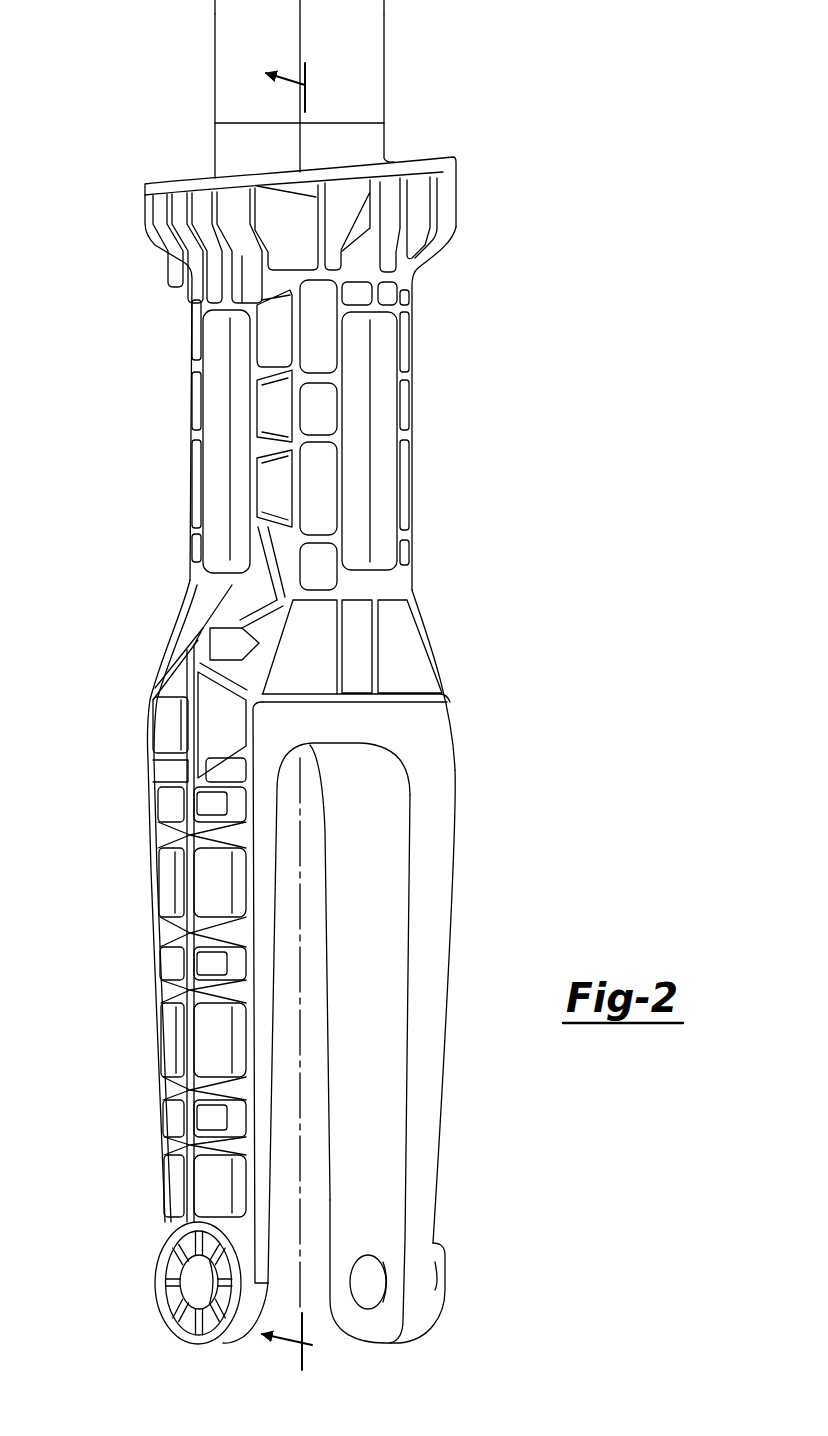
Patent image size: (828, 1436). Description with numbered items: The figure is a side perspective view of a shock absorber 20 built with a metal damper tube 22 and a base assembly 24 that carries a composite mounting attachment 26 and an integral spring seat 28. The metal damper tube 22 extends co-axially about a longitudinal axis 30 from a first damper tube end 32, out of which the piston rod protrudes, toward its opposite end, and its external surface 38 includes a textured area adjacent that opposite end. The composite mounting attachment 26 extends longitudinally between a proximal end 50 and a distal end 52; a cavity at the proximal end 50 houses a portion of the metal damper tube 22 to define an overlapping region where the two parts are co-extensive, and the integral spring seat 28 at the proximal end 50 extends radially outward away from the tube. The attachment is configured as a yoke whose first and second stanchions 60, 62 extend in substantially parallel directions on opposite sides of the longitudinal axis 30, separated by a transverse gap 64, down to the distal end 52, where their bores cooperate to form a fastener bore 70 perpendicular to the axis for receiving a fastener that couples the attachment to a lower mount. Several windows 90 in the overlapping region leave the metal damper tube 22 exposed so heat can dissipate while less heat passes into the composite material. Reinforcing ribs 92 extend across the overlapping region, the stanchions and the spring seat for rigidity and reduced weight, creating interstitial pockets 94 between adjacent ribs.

The shock absorber 20 is at (606, 93).
The metal damper tube 22 is at (396, 72).
The base assembly 24 is at (432, 615).
The composite mounting attachment 26 is at (415, 720).
The integral spring seat 28 is at (423, 160).
The longitudinal axis 30 is at (300, 996).
The first damper tube end 32 is at (394, 3).
The external surface 38 is at (238, 95).
The proximal end 50 is at (205, 148).
The distal end 52 is at (156, 1299).
The first stanchion 60 is at (426, 1100).
The second stanchion 62 is at (157, 945).
The transverse gap 64 is at (273, 1220).
The fastener bore 70 is at (188, 1274).
The windows 90 is at (224, 460).
The reinforcing ribs 92 is at (197, 1052).
The interstitial pockets 94 is at (200, 1002).